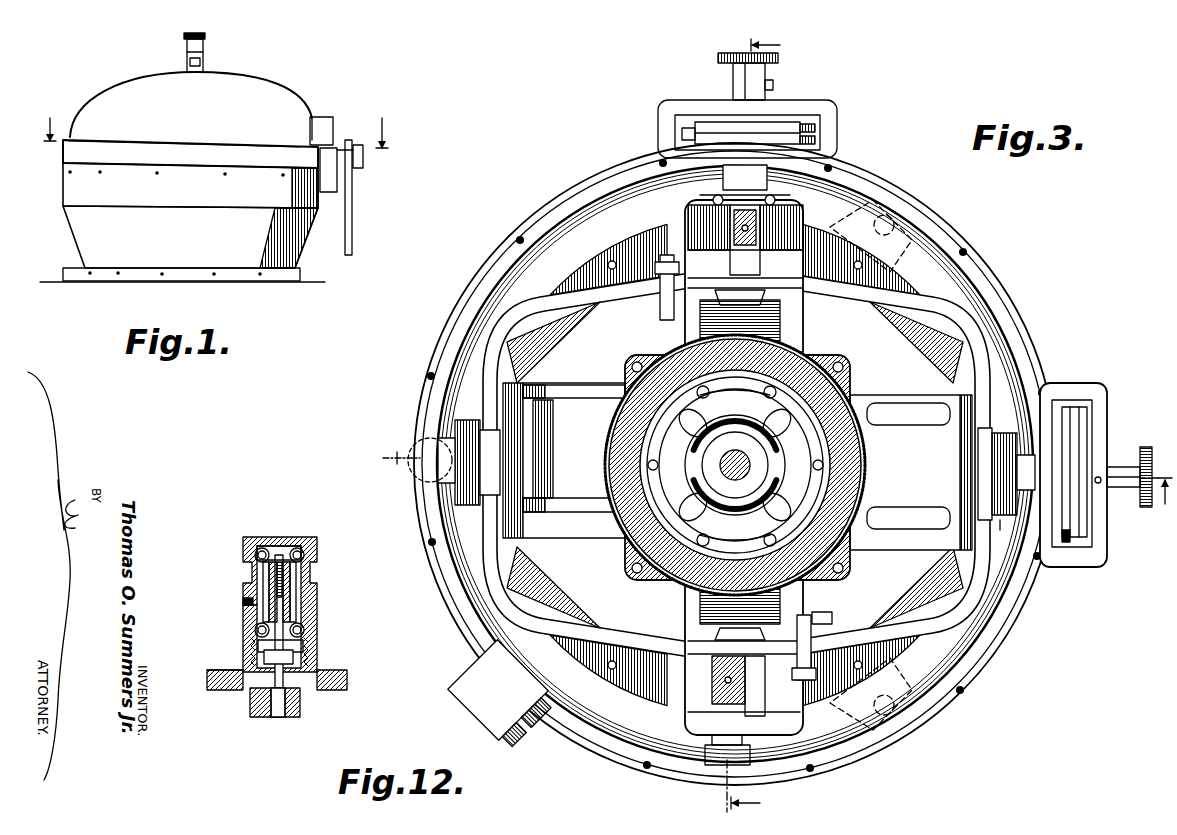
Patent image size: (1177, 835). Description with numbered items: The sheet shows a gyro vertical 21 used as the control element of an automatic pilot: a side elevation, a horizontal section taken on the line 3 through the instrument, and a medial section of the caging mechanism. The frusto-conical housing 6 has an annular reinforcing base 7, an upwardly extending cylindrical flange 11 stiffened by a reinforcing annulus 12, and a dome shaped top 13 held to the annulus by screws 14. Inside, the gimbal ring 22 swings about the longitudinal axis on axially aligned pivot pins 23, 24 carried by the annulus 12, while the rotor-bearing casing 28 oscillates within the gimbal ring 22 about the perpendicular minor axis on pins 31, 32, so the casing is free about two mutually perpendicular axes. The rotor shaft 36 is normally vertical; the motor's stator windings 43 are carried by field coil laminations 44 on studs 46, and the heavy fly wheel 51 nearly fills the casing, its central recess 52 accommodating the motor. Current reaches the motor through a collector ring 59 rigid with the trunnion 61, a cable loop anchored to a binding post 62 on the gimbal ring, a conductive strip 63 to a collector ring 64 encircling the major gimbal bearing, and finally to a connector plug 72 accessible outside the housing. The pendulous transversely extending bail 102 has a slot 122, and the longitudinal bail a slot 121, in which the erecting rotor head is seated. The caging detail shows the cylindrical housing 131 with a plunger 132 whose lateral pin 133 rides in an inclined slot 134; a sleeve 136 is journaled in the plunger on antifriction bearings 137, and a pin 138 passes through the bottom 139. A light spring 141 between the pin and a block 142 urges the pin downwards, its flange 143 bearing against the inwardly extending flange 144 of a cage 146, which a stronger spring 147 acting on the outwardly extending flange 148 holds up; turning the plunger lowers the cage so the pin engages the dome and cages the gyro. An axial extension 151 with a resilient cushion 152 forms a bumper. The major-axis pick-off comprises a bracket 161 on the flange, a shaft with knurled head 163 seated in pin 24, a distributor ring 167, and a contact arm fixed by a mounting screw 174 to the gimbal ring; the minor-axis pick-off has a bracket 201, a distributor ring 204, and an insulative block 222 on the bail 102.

In FIG. 1, the section line 3— 3 is at (217, 123).
In FIG. 1, the housing 6 is at (66, 243).
In FIG. 3, the housing 6 is at (761, 431).
In FIG. 3, the annular reinforcing base 7 is at (771, 482).
In FIG. 1, the cylindrical flange 11 is at (152, 203).
In FIG. 1, the reinforcing annulus 12 is at (199, 148).
In FIG. 3, the reinforcing annulus 12 is at (593, 746).
In FIG. 1, the dome shaped top 13 is at (265, 87).
In FIG. 1, the screws 14 is at (100, 140).
In FIG. 3, the gyro vertical 21 is at (834, 357).
In FIG. 3, the gimbal ring 22 is at (956, 332).
In FIG. 3, the pivot pin 23 is at (440, 462).
In FIG. 3, the pivot pin 24 is at (1010, 445).
In FIG. 3, the rotor-bearing casing 28 is at (870, 476).
In FIG. 3, the pin 31 is at (708, 658).
In FIG. 3, the pin 32 is at (748, 290).
In FIG. 3, the shaft 36 is at (752, 466).
In FIG. 3, the stator windings 43 is at (735, 465).
In FIG. 3, the field coil laminations 44 is at (704, 452).
In FIG. 3, the studs 46 is at (764, 394).
In FIG. 3, the fly wheel 51 is at (612, 460).
In FIG. 3, the central recess 52 is at (650, 505).
In FIG. 3, the collector ring 59 is at (780, 322).
In FIG. 3, the trunnion 61 is at (830, 616).
In FIG. 3, the binding post 62 is at (662, 306).
In FIG. 3, the strip 63 is at (546, 300).
In FIG. 3, the collector ring 64 is at (468, 506).
In FIG. 3, the connector plug 72 is at (472, 685).
In FIG. 3, the transversely extending bail 102 is at (800, 230).
In FIG. 3, the slot 121 is at (872, 404).
In FIG. 3, the slot 122 is at (734, 256).
In FIG. 1, the cylindrical housing 131 is at (187, 60).
In FIG. 12, the cylindrical housing 131 is at (312, 597).
In FIG. 12, the plunger 132 is at (305, 580).
In FIG. 12, the pin 133 is at (244, 600).
In FIG. 1, the inclined slot 134 is at (204, 60).
In FIG. 12, the inclined slot 134 is at (246, 612).
In FIG. 12, the sleeve 136 is at (304, 556).
In FIG. 12, the antifriction bearings 137 is at (248, 540).
In FIG. 12, the pin 138 is at (296, 655).
In FIG. 12, the bottom 139 is at (252, 700).
In FIG. 12, the spring 141 is at (256, 572).
In FIG. 12, the block 142 is at (279, 548).
In FIG. 12, the flange 143 is at (320, 690).
In FIG. 12, the inwardly extending flange 144 is at (230, 688).
In FIG. 12, the cage 146 is at (308, 632).
In FIG. 12, the spring 147 is at (256, 652).
In FIG. 12, the outwardly extending flange 148 is at (250, 640).
In FIG. 12, the axial extension 151 is at (268, 720).
In FIG. 12, the resilient cushion 152 is at (300, 712).
In FIG. 3, the bracket 161 is at (1097, 406).
In FIG. 3, the knurled head 163 is at (1142, 498).
In FIG. 3, the distributor ring 167 is at (1088, 446).
In FIG. 3, the mounting screw 174 is at (977, 473).
In FIG. 3, the bracket 201 is at (790, 108).
In FIG. 3, the distributor ring 204 is at (720, 118).
In FIG. 3, the block 222 is at (798, 195).